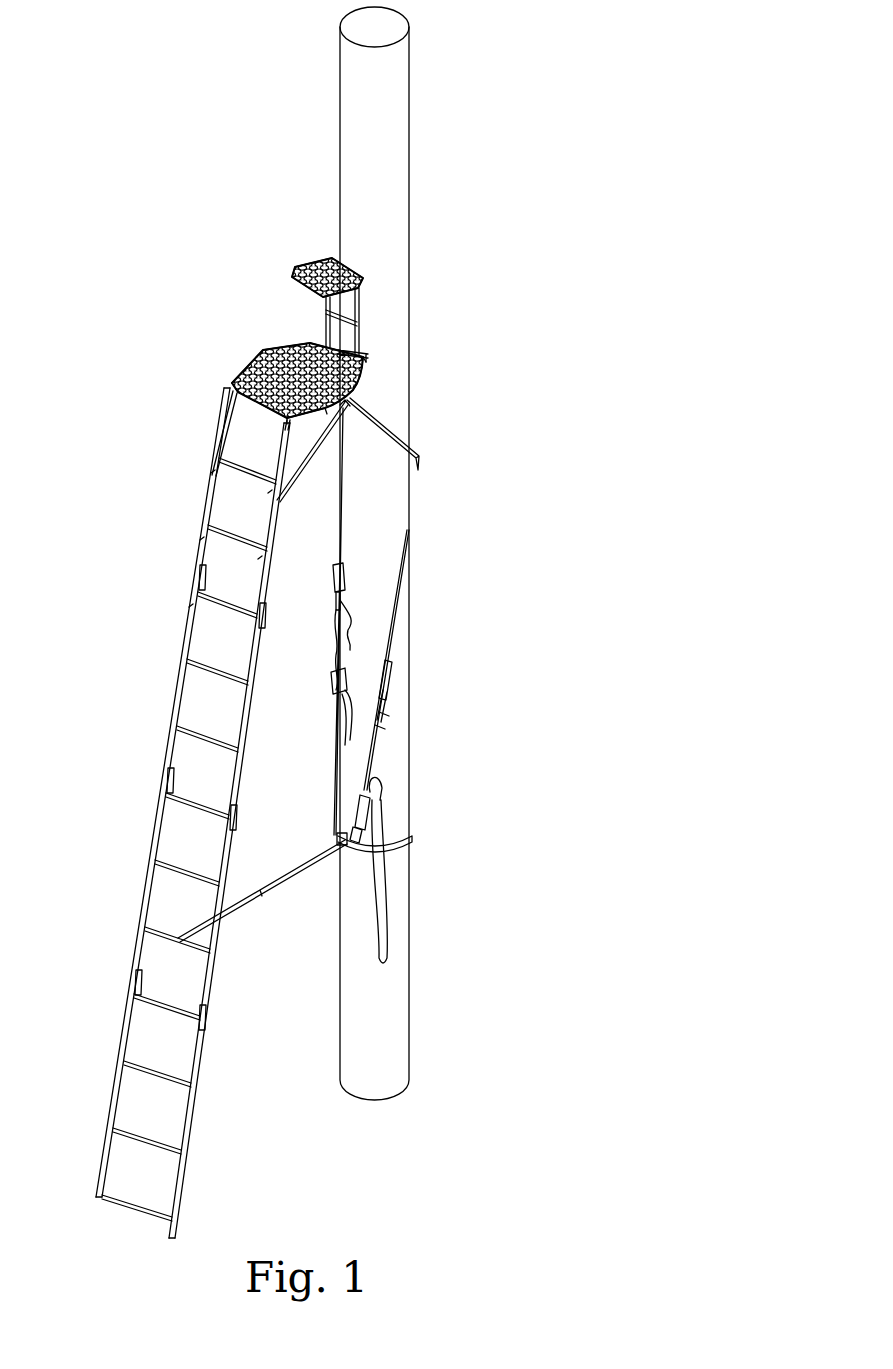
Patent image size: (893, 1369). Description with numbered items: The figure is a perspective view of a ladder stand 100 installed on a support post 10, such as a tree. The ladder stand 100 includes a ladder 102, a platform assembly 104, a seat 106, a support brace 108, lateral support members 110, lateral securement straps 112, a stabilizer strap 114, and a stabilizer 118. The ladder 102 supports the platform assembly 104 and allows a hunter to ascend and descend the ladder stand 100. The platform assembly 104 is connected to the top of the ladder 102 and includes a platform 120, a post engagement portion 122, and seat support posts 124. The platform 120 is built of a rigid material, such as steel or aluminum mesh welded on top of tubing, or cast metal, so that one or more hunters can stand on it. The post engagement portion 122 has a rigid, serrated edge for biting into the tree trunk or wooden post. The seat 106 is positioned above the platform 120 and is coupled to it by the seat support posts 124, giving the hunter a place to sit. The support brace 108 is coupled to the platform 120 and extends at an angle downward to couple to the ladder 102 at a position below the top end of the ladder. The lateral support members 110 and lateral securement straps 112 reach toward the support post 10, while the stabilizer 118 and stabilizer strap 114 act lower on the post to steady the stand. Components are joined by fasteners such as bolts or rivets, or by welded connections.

The support post 10 is at (385, 177).
The ladder stand 100 is at (153, 561).
The ladder 102 is at (152, 816).
The platform assembly 104 is at (230, 361).
The seat 106 is at (312, 258).
The support brace 108 is at (232, 418).
The lateral support members 110 is at (393, 430).
The lateral securement straps 112 is at (338, 545).
The stabilizer strap 114 is at (400, 848).
The stabilizer 118 is at (282, 886).
The platform 120 is at (292, 348).
The post engagement portion 122 is at (372, 361).
The seat support posts 124 is at (326, 306).